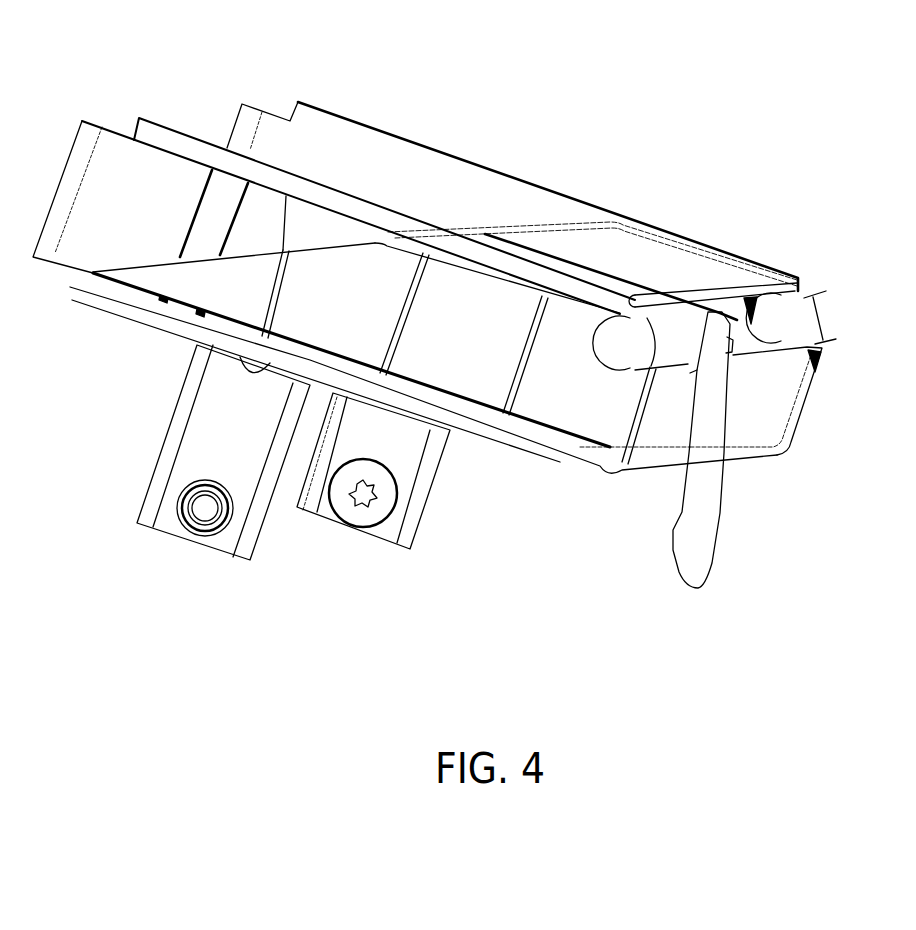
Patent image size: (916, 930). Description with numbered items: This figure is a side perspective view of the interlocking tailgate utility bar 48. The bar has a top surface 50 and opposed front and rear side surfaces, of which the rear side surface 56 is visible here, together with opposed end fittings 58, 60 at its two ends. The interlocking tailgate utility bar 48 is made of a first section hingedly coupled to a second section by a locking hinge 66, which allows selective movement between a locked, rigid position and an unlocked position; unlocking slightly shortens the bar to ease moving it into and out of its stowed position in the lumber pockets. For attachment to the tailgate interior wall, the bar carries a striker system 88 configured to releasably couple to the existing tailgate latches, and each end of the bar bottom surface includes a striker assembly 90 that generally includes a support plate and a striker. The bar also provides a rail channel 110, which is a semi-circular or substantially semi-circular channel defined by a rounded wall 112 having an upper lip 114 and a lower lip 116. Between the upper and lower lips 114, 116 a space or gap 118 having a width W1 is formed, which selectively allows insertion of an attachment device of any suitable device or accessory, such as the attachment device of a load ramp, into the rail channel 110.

The interlocking tailgate utility bar 48 is at (637, 157).
The top surface 50 is at (650, 245).
The rear side surface 56 is at (767, 421).
The end fitting 58 is at (95, 258).
The end fitting 60 is at (335, 125).
The locking hinge 66 is at (684, 479).
The striker system 88 is at (212, 560).
The striker assembly 90 is at (325, 625).
The rail channel 110 is at (752, 302).
The rounded wall 112 is at (617, 357).
The upper lip 114 is at (622, 299).
The lower lip 116 is at (630, 374).
The gap 118 is at (811, 380).
The width W1 is at (826, 318).